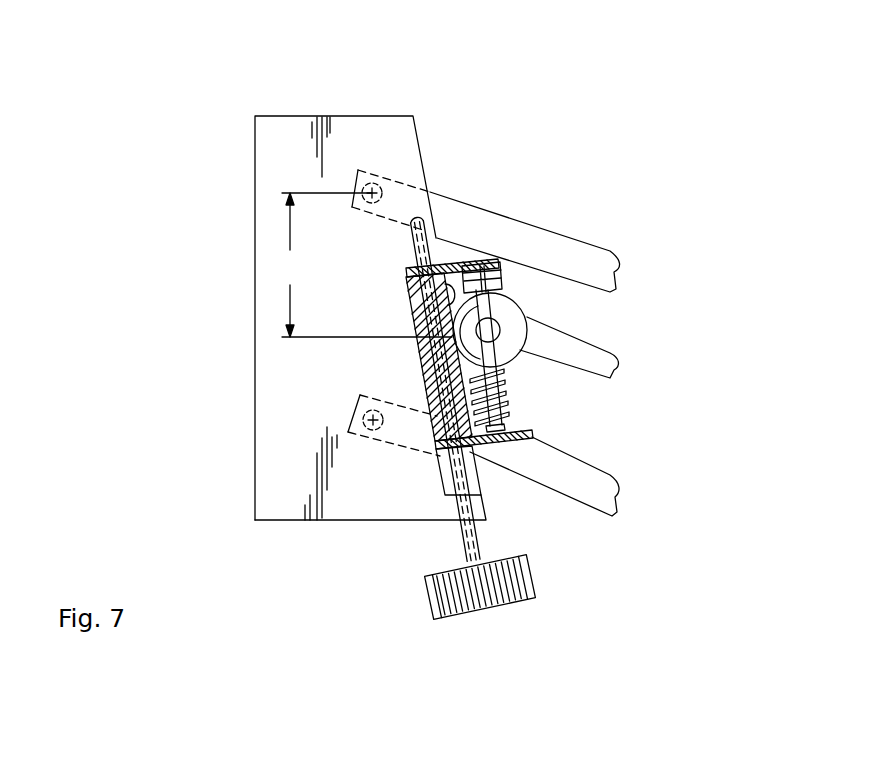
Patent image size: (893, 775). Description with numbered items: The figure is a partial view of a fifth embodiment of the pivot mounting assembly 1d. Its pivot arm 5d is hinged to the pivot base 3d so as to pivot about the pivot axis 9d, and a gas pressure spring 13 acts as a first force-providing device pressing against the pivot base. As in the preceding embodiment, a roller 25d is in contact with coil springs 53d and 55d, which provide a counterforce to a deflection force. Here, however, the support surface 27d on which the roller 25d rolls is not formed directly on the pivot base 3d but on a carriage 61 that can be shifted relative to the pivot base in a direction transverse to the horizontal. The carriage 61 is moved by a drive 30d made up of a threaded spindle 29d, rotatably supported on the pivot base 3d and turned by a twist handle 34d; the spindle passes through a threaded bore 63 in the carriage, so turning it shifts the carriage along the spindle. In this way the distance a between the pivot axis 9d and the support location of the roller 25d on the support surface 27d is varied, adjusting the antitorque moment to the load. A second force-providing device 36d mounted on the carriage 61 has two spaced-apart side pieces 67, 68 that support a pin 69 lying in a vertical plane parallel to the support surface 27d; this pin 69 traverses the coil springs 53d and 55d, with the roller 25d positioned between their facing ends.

The pivot mounting assembly 1d is at (461, 100).
The pivot base 3d is at (288, 116).
The pivot arm 5d is at (563, 237).
The pivot axis 9d is at (370, 197).
The gas pressure spring 13 is at (621, 371).
The roller 25d is at (575, 335).
The support surface 27d is at (420, 298).
The threaded spindle 29d is at (462, 547).
The drive 30d is at (590, 571).
The twist handle 34d is at (483, 613).
The second force-providing device 36d is at (653, 297).
The coil spring 53d is at (501, 273).
The coil spring 55d is at (520, 397).
The carriage 61 is at (492, 465).
The threaded bore 63 is at (437, 348).
The side piece 67 is at (533, 437).
The side piece 68 is at (458, 259).
The pin 69 is at (477, 332).
The distance a is at (367, 265).